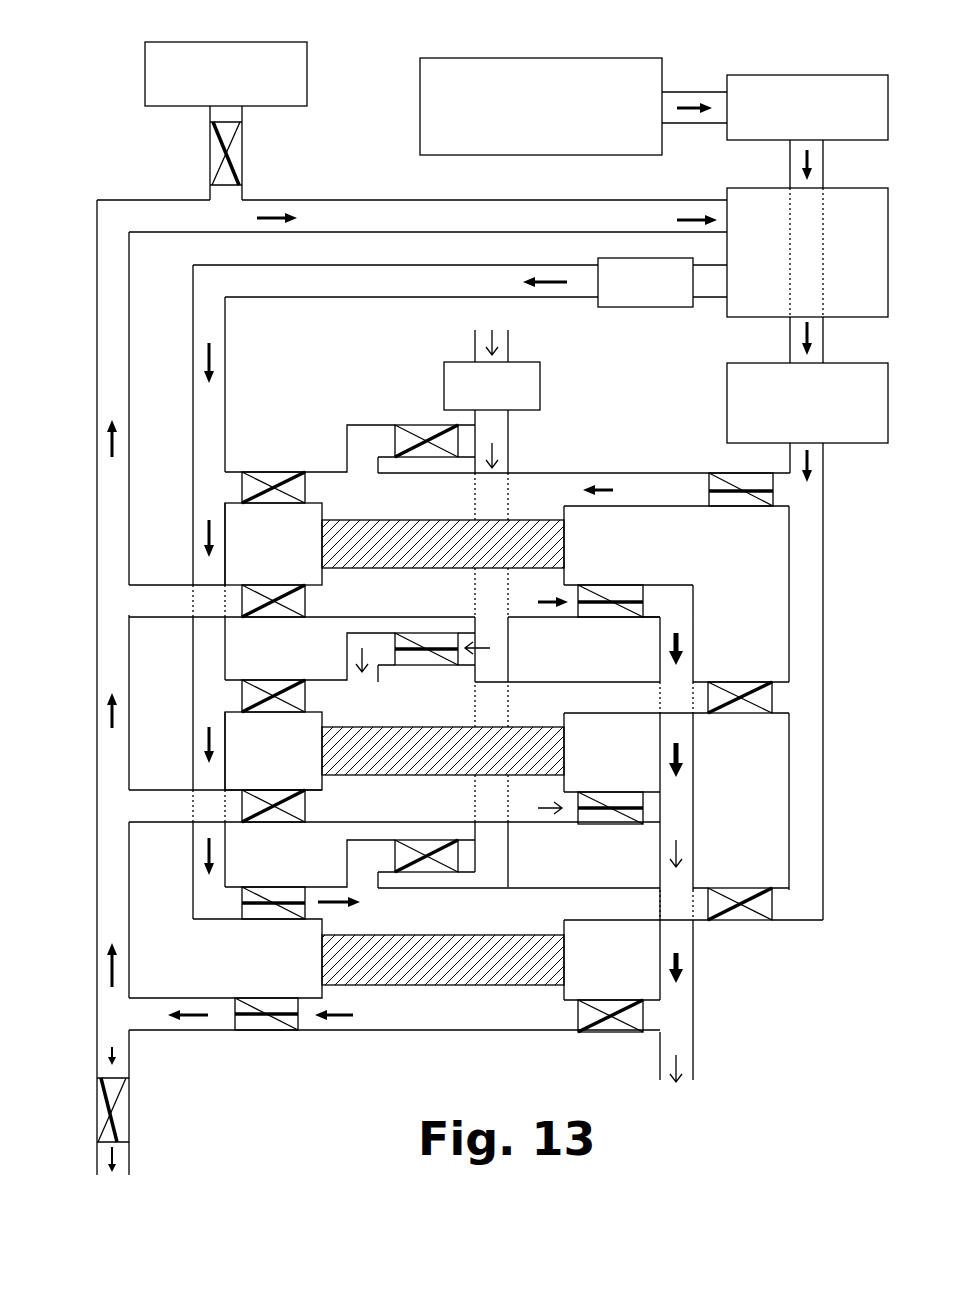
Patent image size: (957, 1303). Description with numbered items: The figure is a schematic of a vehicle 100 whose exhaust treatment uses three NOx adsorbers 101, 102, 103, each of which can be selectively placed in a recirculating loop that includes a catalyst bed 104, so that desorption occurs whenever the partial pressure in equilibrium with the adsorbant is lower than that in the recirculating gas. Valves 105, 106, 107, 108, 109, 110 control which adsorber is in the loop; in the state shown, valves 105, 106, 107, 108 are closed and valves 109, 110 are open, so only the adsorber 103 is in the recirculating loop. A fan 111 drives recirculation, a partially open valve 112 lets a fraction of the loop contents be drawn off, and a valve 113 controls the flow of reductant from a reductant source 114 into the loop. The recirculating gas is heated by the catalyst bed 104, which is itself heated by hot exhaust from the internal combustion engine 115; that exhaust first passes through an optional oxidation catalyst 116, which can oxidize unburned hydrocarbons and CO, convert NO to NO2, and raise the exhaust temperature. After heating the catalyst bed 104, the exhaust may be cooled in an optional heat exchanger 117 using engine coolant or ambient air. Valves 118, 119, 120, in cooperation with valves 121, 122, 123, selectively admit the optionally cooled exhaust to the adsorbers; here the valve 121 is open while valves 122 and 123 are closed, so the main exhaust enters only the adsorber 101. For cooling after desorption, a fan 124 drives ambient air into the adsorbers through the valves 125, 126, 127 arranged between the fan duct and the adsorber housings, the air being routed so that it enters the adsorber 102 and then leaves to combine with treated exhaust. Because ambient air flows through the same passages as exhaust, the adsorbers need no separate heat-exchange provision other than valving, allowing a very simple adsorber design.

The vehicle 100 is at (104, 46).
The adsorber 101 is at (564, 548).
The adsorber 102 is at (564, 755).
The adsorber 103 is at (564, 962).
The catalyst bed 104 is at (757, 188).
The valve 105 is at (260, 472).
The valve 106 is at (257, 585).
The valve 107 is at (260, 680).
The valve 108 is at (257, 790).
The valve 109 is at (260, 887).
The valve 110 is at (257, 998).
The fan 111 is at (630, 307).
The valve 112 is at (129, 1097).
The valve 113 is at (242, 152).
The reductant source 114 is at (307, 78).
The internal combustion engine 115 is at (638, 58).
The oxidation catalyst 116 is at (800, 75).
The heat exchanger 117 is at (727, 407).
The valve 118 is at (722, 506).
The valve 119 is at (722, 713).
The valve 120 is at (722, 920).
The valve 121 is at (592, 585).
The valve 122 is at (590, 792).
The valve 123 is at (592, 1000).
The fan 124 is at (540, 378).
The valve 125 is at (430, 425).
The valve 126 is at (428, 633).
The valve 127 is at (428, 840).